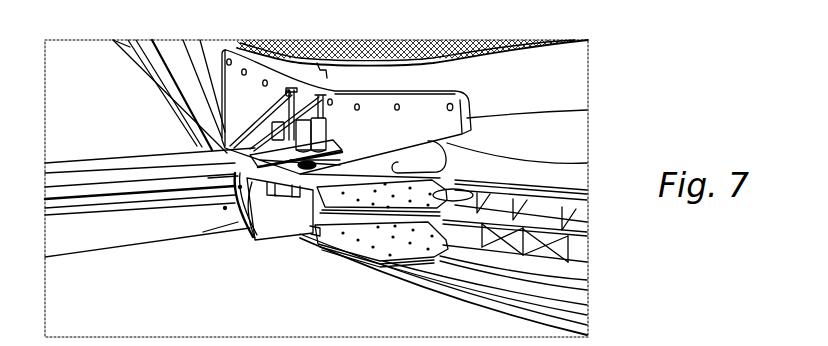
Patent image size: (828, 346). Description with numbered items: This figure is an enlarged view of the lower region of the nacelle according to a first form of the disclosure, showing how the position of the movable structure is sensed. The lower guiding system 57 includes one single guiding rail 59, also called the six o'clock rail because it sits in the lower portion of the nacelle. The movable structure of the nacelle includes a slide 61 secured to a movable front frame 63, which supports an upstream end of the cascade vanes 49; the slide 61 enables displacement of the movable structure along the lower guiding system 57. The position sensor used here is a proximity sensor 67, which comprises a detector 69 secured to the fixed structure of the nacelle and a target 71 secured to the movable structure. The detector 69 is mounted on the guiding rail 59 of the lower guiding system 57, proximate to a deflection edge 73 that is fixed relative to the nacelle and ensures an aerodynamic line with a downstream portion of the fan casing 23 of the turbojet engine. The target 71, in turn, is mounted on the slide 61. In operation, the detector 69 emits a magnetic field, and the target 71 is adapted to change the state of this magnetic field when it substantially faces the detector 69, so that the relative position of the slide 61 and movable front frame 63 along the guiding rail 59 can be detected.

The fan casing 23 is at (403, 293).
The cascade vanes 49 is at (403, 40).
The lower guiding system 57 is at (137, 148).
The guiding rail 59 is at (88, 168).
The slide 61 is at (271, 223).
The movable front frame 63 is at (172, 53).
The proximity sensor 67 is at (328, 144).
The detector 69 is at (320, 133).
The target 71 is at (246, 229).
The deflection edge 73 is at (572, 178).